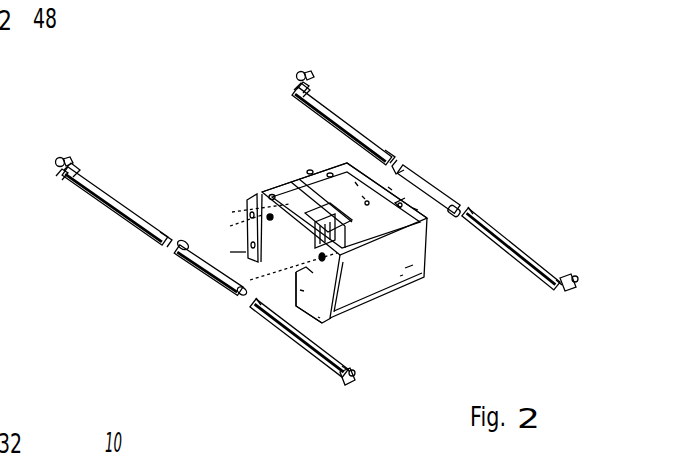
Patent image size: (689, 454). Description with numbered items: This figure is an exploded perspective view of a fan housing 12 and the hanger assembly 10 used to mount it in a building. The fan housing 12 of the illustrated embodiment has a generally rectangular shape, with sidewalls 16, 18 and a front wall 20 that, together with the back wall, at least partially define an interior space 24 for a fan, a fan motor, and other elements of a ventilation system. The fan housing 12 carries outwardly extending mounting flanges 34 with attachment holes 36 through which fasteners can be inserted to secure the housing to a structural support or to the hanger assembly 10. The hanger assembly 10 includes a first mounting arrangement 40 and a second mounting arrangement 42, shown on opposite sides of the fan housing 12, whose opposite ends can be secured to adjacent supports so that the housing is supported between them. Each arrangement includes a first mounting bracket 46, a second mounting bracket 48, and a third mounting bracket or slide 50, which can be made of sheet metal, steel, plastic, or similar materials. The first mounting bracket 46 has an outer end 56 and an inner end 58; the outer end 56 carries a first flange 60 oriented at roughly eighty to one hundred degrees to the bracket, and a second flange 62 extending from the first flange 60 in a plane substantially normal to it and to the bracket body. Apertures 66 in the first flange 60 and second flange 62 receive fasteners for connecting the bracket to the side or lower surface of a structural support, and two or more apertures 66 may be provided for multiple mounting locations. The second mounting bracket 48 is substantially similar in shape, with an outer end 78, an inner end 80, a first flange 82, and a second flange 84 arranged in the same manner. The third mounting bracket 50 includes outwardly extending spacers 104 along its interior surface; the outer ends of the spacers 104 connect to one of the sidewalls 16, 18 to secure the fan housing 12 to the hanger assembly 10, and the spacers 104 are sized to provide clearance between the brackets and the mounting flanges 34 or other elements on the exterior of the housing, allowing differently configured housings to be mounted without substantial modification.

The hanger assembly 10 is at (190, 68).
The fan housing 12 is at (421, 255).
The sidewall 16 is at (285, 270).
The sidewall 18 is at (338, 170).
The front wall 20 is at (372, 293).
The interior space 24 is at (396, 200).
The mounting flange 34 is at (247, 207).
The attachment hole 36 is at (235, 236).
The first mounting arrangement 40 is at (384, 12).
The second mounting arrangement 42 is at (77, 98).
The first mounting bracket 46 is at (102, 200).
The second mounting bracket 48 is at (295, 338).
The third mounting bracket 50 is at (200, 274).
The outer end 56 is at (78, 168).
The inner end 58 is at (158, 241).
The first flange 60 is at (60, 176).
The second flange 62 is at (56, 157).
The aperture 66 is at (68, 158).
The outer end 78 is at (347, 372).
The inner end 80 is at (258, 306).
The first flange 82 is at (347, 387).
The second flange 84 is at (357, 375).
The spacer 104 is at (185, 242).